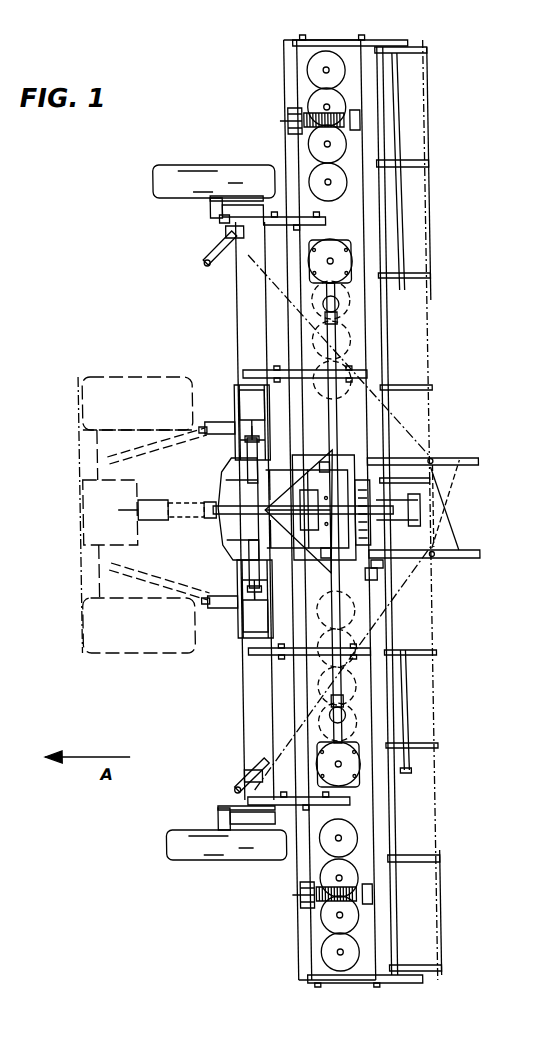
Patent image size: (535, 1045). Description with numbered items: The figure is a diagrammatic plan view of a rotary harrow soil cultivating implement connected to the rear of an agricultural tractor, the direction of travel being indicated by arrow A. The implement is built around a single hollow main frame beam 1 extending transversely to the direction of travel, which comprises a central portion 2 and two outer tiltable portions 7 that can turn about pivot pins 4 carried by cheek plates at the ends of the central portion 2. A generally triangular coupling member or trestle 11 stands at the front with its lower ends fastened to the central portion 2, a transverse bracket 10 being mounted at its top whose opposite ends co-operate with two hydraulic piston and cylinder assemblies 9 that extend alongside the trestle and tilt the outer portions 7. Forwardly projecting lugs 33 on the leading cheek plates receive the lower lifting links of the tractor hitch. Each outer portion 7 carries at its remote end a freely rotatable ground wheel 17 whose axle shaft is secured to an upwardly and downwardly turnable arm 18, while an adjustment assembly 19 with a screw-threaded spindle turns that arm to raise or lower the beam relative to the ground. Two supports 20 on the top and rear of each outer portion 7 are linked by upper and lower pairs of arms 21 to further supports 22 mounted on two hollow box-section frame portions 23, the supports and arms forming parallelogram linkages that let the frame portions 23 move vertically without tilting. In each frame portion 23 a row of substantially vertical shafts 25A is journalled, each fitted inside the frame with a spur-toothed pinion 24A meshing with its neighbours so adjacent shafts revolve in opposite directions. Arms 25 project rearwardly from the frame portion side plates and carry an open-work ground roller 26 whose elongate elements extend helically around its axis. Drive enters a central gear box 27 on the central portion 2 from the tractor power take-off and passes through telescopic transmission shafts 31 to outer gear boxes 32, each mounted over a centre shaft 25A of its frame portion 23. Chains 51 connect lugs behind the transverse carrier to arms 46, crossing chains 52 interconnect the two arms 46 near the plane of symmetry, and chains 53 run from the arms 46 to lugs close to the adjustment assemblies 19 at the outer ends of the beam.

The main frame beam 1 is at (226, 326).
The central portion 2 is at (218, 468).
The pivot pin 4 is at (228, 416).
The outer tiltable portion 7 is at (234, 348).
The piston and cylinder assembly 9 is at (236, 562).
The transverse bracket 10 is at (220, 492).
The coupling member or trestle 11 is at (216, 536).
The ground wheel 17 is at (220, 162).
The arm 18 is at (232, 196).
The adjustment assembly 19 is at (210, 262).
The support 20 is at (245, 246).
The arm 21 is at (264, 202).
The further support 22 is at (381, 220).
The hollow box-section frame portion 23 is at (358, 331).
The pinion 24A is at (360, 839).
The arm 25 is at (378, 40).
The shaft 25A is at (372, 915).
The ground roller 26 is at (428, 162).
The central gear box 27 is at (353, 465).
The telescopic transmission shaft 31 is at (348, 362).
The outer gear box 32 is at (347, 278).
The lug 33 is at (208, 435).
The arm 46 is at (437, 460).
The chain 51 is at (350, 566).
The chain 52 is at (450, 497).
The chain 53 is at (416, 406).